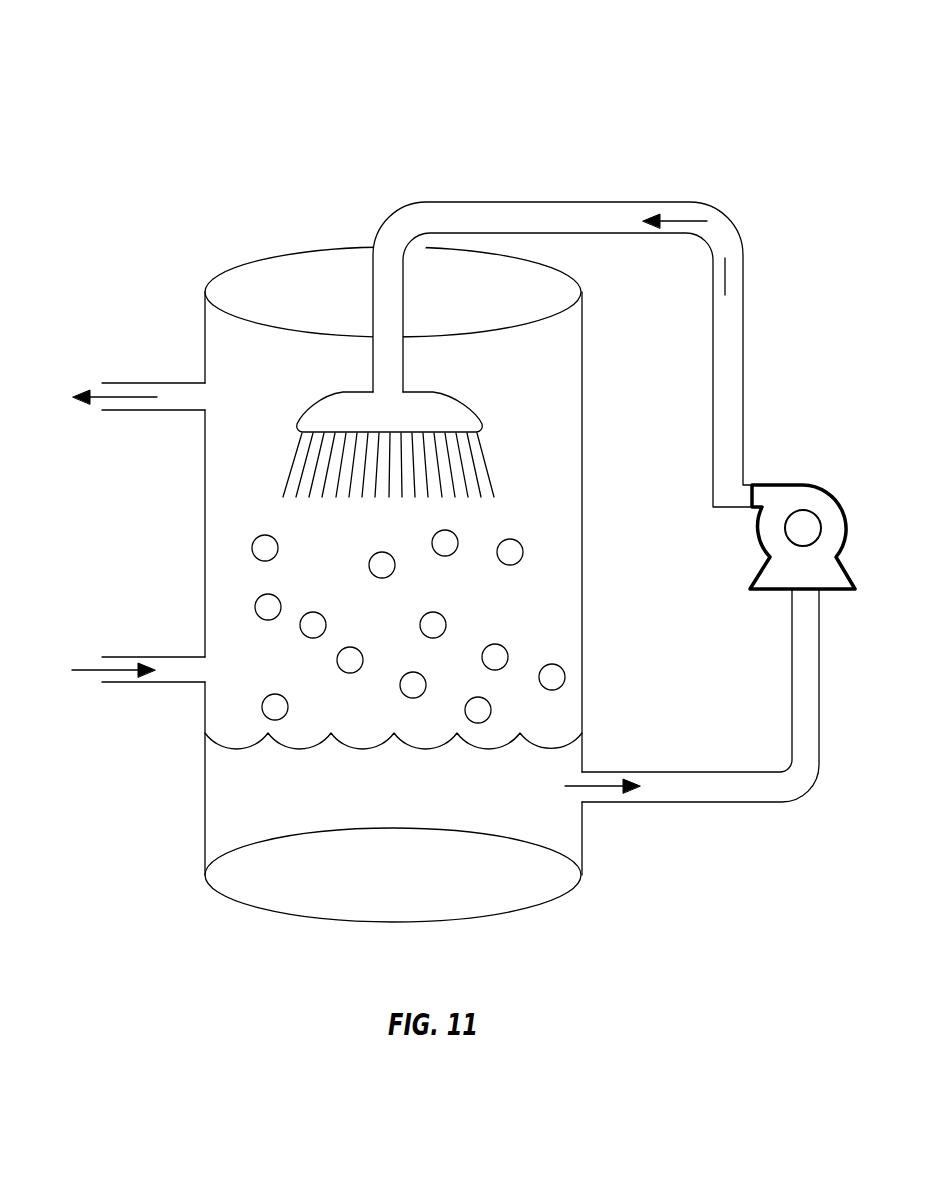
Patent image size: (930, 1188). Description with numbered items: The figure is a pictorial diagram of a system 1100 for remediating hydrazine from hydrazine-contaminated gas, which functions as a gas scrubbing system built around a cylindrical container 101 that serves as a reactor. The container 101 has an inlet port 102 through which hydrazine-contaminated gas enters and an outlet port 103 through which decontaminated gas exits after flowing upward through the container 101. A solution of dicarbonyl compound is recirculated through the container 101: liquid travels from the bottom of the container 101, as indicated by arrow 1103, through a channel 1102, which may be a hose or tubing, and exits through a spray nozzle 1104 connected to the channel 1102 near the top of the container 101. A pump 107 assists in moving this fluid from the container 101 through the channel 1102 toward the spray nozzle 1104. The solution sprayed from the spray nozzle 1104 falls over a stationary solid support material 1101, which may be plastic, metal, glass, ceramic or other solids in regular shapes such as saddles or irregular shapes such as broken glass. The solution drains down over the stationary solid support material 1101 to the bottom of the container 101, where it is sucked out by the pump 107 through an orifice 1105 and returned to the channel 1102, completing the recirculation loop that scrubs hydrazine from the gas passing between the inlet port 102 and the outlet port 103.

The system 1100 is at (152, 74).
The cylindrical container 101 is at (584, 411).
The inlet port 102 is at (132, 683).
The outlet port 103 is at (132, 410).
The pump 107 is at (775, 580).
The stationary solid support material 1101 is at (225, 572).
The channel 1102 is at (735, 328).
The arrow 1103 is at (725, 258).
The spray nozzle 1104 is at (458, 405).
The orifice 1105 is at (598, 788).